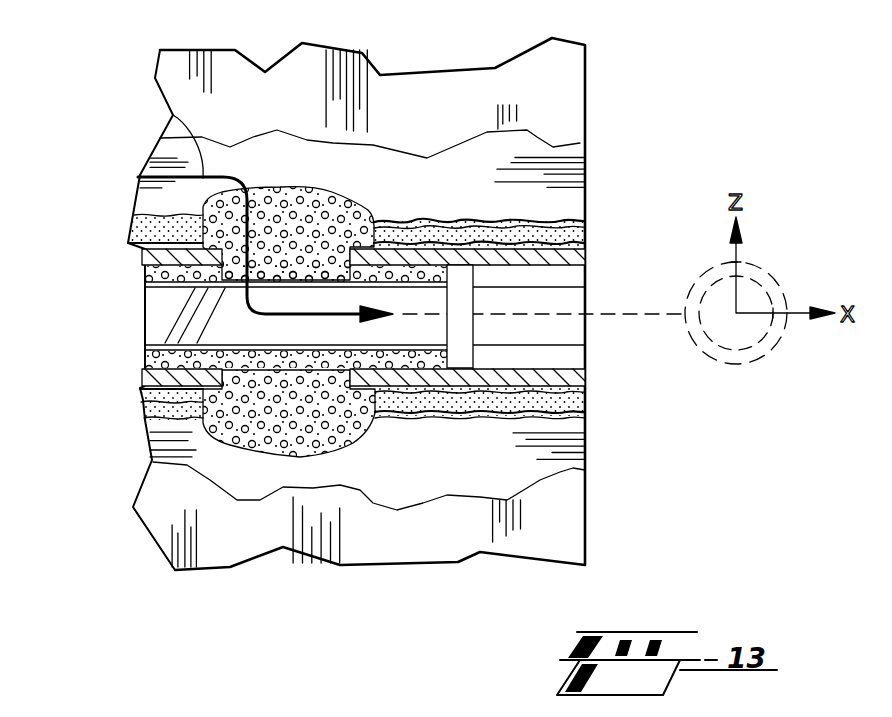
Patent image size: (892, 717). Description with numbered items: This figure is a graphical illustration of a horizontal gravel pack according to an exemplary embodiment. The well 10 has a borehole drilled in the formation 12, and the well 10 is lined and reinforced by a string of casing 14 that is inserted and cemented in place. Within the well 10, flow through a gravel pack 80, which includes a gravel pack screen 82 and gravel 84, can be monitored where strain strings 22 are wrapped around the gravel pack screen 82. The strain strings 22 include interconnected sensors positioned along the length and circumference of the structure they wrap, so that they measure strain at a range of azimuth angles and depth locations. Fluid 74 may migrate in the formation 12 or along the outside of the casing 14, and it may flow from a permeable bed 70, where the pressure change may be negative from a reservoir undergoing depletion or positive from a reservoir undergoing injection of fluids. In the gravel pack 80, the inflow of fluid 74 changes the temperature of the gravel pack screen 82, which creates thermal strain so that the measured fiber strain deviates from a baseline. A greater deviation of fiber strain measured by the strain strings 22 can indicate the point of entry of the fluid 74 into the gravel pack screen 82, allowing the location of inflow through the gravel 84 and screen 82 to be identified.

The well 10 is at (105, 309).
The formation 12 is at (462, 125).
The casing 14 is at (580, 257).
The strain strings 22 is at (158, 292).
The permeable bed 70 is at (537, 138).
The fluid 74 is at (170, 115).
The gravel pack 80 is at (362, 188).
The gravel pack screen 82 is at (158, 338).
The gravel 84 is at (282, 203).